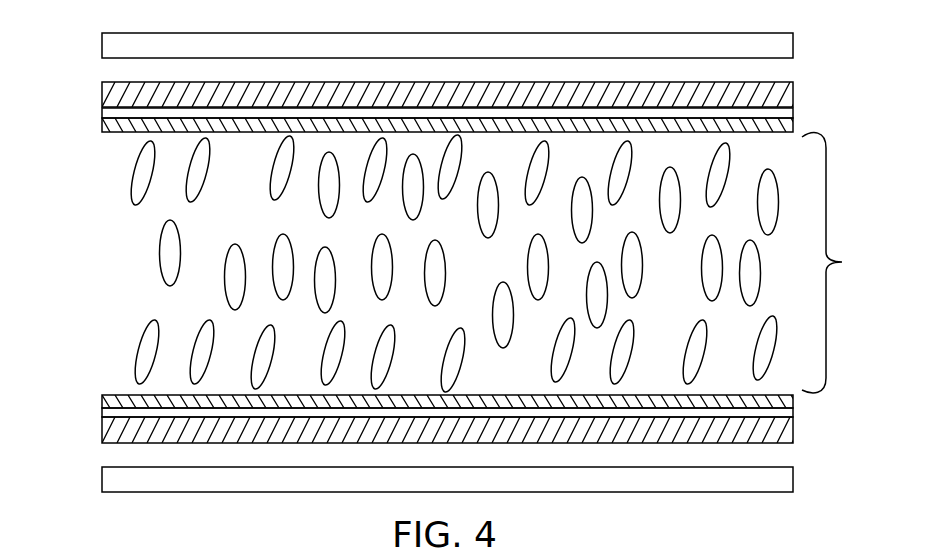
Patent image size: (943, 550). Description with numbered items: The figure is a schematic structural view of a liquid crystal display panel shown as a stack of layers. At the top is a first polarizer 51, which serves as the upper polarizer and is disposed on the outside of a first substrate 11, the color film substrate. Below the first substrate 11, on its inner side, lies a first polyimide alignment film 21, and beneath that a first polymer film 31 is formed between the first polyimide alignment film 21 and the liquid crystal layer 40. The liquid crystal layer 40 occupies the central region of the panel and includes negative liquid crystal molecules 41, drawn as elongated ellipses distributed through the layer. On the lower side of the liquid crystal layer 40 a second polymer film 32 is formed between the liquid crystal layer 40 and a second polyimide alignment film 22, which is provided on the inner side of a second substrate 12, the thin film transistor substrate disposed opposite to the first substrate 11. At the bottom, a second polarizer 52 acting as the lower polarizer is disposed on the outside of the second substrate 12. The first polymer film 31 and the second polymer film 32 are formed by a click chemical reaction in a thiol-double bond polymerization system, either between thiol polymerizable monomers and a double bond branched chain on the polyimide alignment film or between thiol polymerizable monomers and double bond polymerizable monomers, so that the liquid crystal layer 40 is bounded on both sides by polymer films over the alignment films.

The first polarizer 51 is at (102, 43).
The first substrate 11 is at (102, 93).
The first polyimide alignment film 21 is at (102, 111).
The first polymer film 31 is at (102, 129).
The liquid crystal layer 40 is at (458, 264).
The negative liquid crystal molecules 41 is at (161, 268).
The second polymer film 32 is at (102, 398).
The second polyimide alignment film 22 is at (102, 411).
The second substrate 12 is at (102, 429).
The second polarizer 52 is at (102, 476).